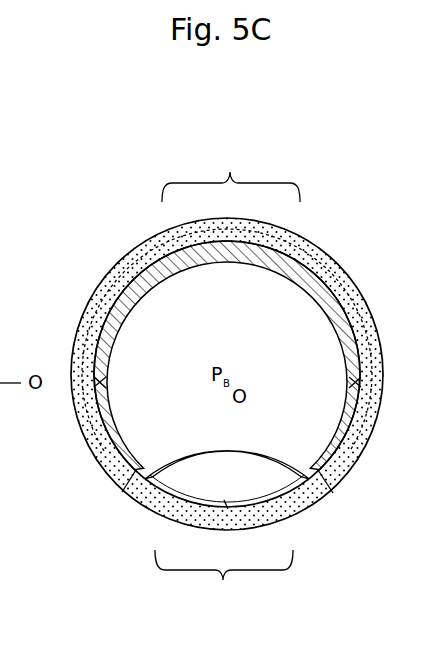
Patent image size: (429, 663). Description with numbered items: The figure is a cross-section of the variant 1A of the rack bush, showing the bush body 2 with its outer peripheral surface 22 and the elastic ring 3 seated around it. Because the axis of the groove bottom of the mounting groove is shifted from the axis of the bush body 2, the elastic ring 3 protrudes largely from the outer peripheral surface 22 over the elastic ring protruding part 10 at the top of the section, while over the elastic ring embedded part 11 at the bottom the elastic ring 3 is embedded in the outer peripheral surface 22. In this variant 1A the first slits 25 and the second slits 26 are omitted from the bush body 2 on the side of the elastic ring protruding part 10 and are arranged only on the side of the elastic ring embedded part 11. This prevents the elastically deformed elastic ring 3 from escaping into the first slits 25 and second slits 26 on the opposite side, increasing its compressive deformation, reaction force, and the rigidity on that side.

The variant of the rack bush 1A is at (390, 143).
The bush body 2 is at (113, 298).
The elastic ring 3 is at (341, 270).
The elastic ring protruding part 10 is at (231, 175).
The elastic ring embedded part 11 is at (224, 578).
The outer peripheral surface 22 is at (145, 250).
The first slit 25 is at (0, 368).
The second slit 26 is at (122, 492).